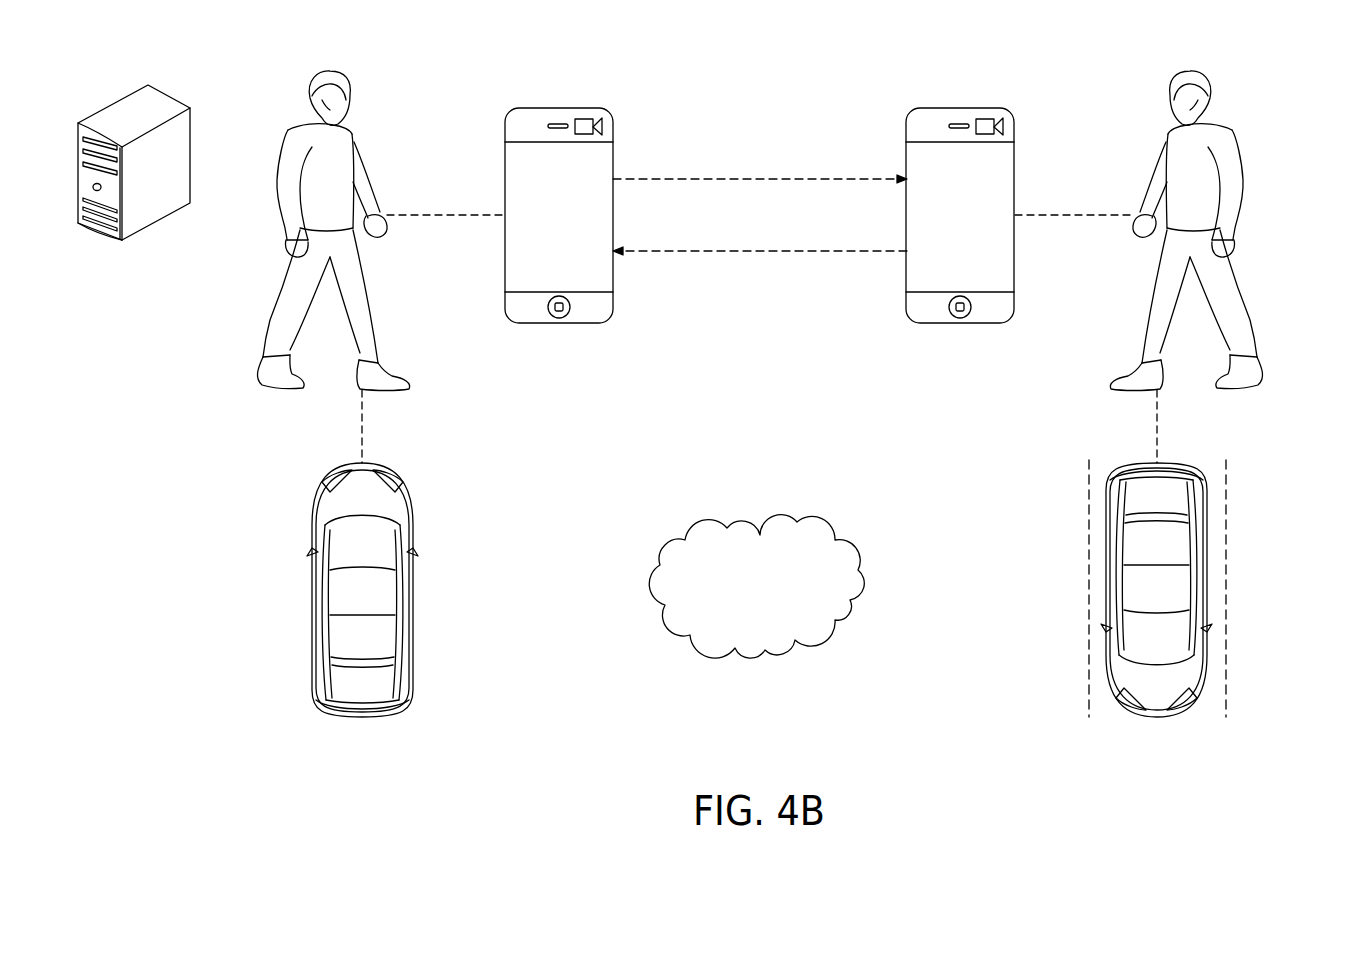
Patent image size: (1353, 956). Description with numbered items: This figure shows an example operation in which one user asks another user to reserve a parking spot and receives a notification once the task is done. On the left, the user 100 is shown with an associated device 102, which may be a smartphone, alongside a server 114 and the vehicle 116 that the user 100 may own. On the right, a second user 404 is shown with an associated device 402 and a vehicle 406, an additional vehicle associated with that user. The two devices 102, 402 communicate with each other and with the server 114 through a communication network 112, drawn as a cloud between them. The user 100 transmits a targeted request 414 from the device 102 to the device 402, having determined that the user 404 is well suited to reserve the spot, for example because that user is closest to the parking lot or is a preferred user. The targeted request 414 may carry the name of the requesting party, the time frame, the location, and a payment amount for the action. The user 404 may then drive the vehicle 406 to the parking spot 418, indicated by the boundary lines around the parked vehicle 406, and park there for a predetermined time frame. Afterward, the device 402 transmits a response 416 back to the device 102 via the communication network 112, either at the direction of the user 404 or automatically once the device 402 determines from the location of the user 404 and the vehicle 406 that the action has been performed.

The user 100 is at (281, 222).
The device 102 is at (560, 107).
The communication network 112 is at (786, 522).
The server 114 is at (165, 95).
The vehicle 116 is at (312, 588).
The device 402 is at (960, 107).
The user 404 is at (1245, 180).
The vehicle 406 is at (1206, 588).
The targeted request 414 is at (850, 178).
The response 416 is at (850, 250).
The parking spot 418 is at (1088, 590).